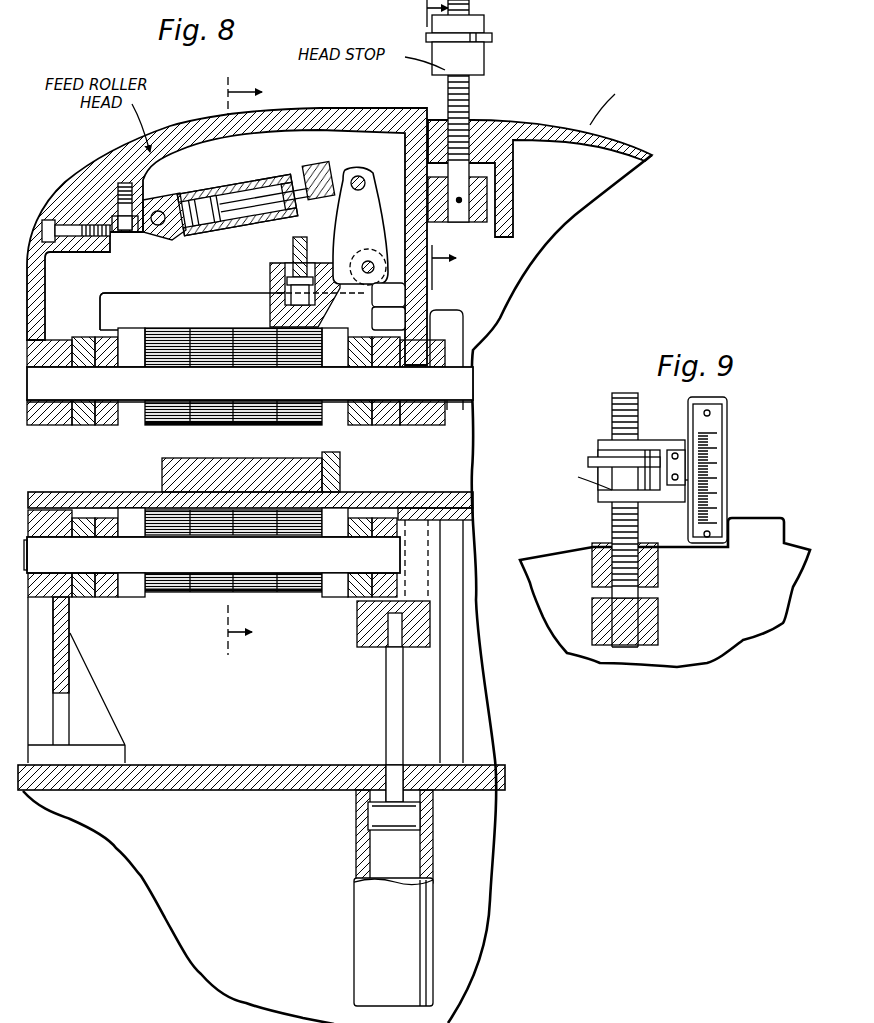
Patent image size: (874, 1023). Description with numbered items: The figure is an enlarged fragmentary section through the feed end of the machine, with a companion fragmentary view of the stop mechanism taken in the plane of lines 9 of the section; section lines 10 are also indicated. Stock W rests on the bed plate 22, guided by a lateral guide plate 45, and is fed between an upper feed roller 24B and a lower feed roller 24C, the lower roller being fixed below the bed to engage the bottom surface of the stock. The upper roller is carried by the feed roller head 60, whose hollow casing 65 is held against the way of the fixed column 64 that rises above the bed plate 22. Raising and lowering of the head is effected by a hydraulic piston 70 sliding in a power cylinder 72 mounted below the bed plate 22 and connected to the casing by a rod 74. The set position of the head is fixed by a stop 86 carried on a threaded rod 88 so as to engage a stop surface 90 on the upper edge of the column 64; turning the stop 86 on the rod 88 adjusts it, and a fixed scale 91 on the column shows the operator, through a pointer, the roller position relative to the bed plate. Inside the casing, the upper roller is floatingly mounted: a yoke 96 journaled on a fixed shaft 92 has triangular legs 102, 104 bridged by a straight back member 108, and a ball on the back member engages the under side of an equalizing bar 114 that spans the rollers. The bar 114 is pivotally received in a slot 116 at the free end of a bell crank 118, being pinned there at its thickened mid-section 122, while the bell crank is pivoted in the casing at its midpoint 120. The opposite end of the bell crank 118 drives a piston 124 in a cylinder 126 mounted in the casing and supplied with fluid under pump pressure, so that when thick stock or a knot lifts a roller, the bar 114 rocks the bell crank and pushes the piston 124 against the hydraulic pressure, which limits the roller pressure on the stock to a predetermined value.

In FIG. 8, the feed roller head 60 is at (124, 157).
In FIG. 8, the hollow casing 65 is at (200, 133).
In FIG. 9, the hollow casing 65 is at (658, 626).
In FIG. 8, the fixed column 64 is at (612, 140).
In FIG. 9, the fixed column 64 is at (715, 645).
In FIG. 8, the stop 86 is at (482, 70).
In FIG. 9, the stop 86 is at (608, 495).
In FIG. 8, the threaded rod 88 is at (449, 86).
In FIG. 9, the threaded rod 88 is at (612, 412).
In FIG. 8, the stop surface 90 is at (500, 119).
In FIG. 9, the fixed scale 91 is at (713, 470).
In FIG. 8, the fixed shaft 92 is at (141, 390).
In FIG. 8, the yoke 96 is at (119, 293).
In FIG. 8, the triangular leg 102 is at (80, 346).
In FIG. 8, the triangular leg 104 is at (100, 331).
In FIG. 8, the back member 108 is at (197, 304).
In FIG. 8, the equalizing bar 114 is at (302, 258).
In FIG. 8, the slot 116 is at (291, 270).
In FIG. 8, the bell crank 118 is at (379, 190).
In FIG. 8, the midpoint 120 is at (370, 286).
In FIG. 8, the thickened mid-section 122 is at (272, 298).
In FIG. 8, the piston 124 is at (202, 196).
In FIG. 8, the cylinder 126 is at (250, 185).
In FIG. 8, the upper feed roller 24B is at (214, 428).
In FIG. 8, the lower feed roller 24C is at (176, 591).
In FIG. 8, the bed plate 22 is at (74, 491).
In FIG. 8, the stock W is at (162, 471).
In FIG. 8, the lateral guide plate 45 is at (340, 471).
In FIG. 8, the hydraulic piston 70 is at (370, 838).
In FIG. 8, the power cylinder 72 is at (360, 909).
In FIG. 8, the rod 74 is at (386, 714).
In FIG. 8, the section line 10 is at (229, 372).
In FIG. 8, the section line 9 is at (432, 145).